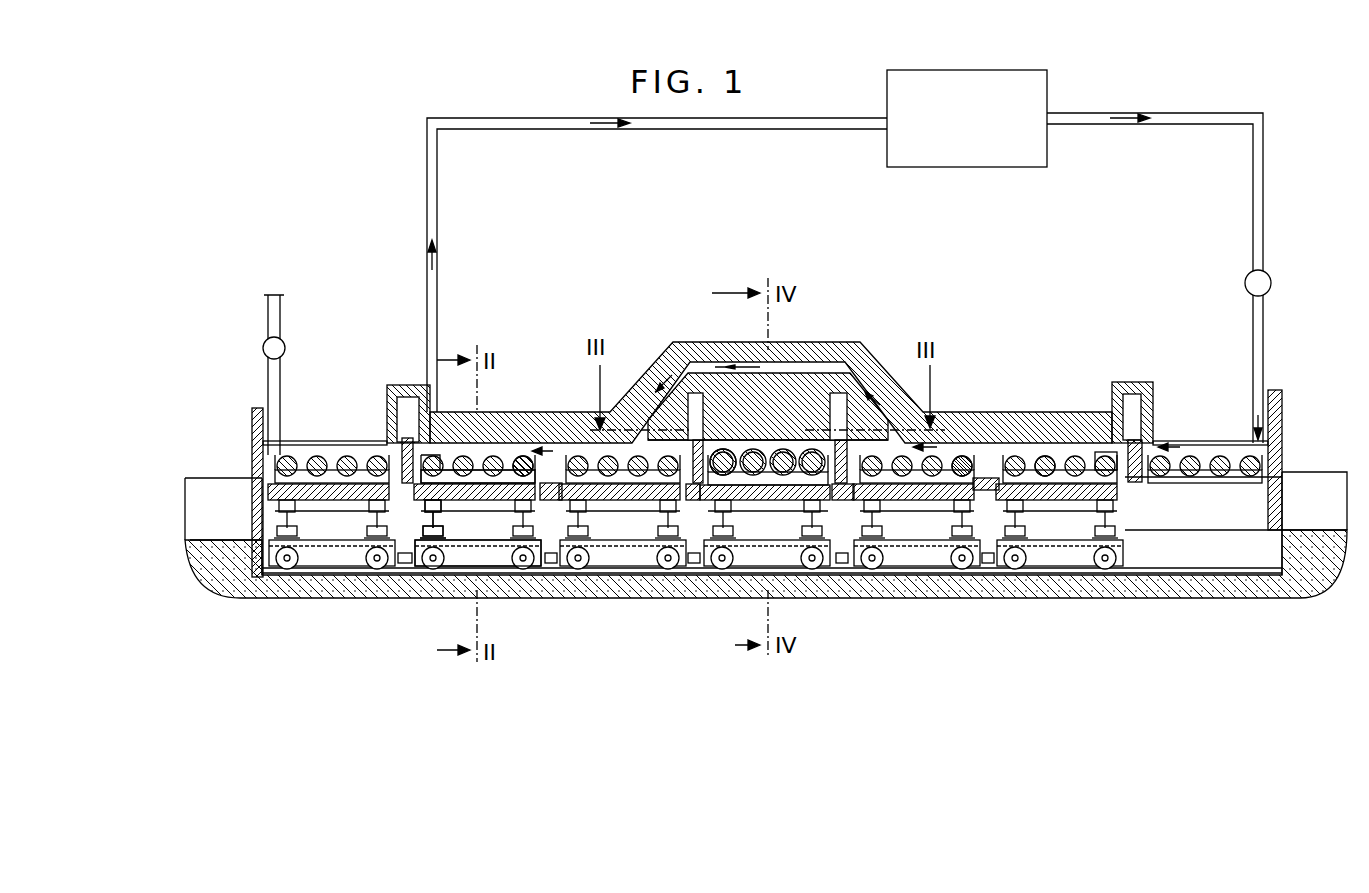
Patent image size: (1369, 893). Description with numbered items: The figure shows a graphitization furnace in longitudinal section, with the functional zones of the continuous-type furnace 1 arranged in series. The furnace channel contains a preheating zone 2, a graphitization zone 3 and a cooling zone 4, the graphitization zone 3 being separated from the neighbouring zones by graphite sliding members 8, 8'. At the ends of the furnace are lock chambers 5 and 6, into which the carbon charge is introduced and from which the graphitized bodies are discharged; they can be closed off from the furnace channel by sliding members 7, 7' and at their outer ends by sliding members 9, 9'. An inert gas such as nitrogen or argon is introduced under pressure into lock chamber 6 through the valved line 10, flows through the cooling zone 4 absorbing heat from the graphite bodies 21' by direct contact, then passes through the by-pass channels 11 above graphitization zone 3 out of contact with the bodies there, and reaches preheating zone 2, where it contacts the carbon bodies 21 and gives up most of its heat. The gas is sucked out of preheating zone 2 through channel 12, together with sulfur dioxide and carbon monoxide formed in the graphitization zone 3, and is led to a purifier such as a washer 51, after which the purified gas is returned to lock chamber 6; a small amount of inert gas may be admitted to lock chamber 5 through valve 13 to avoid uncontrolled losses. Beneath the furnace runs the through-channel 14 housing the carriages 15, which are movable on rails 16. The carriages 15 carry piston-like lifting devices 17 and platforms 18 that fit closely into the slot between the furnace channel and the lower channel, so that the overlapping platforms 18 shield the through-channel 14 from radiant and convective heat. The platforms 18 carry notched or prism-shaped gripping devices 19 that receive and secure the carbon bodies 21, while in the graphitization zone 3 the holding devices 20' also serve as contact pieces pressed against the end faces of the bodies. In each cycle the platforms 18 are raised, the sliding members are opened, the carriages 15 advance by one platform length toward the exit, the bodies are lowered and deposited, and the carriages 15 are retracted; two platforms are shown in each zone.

The continuous-type furnace 1 is at (592, 458).
The preheating zone 2 is at (485, 452).
The graphitization zone 3 is at (768, 448).
The cooling zone 4 is at (992, 452).
The lock chamber 5 is at (315, 445).
The lock chamber 6 is at (1212, 440).
The sliding member 7 is at (398, 434).
The sliding member 7' is at (1146, 432).
The graphite sliding member 8 is at (681, 438).
The graphite sliding member 8' is at (826, 438).
The sliding member 9 is at (242, 492).
The sliding member 9' is at (1296, 460).
The valved line 10 is at (1262, 300).
The by-pass channels 11 is at (815, 368).
The channel 12 is at (440, 452).
The valve 13 is at (298, 385).
The through-channel 14 is at (625, 523).
The carriages 15 is at (433, 566).
The rails 16 is at (1208, 568).
The piston-like lifting devices 17 is at (438, 510).
The platforms 18 is at (546, 495).
The gripping devices 19 is at (478, 478).
The holding devices 20' is at (730, 435).
The carbon bodies 21 is at (520, 434).
The graphite bodies 21' is at (997, 424).
The purifier 51 is at (979, 130).